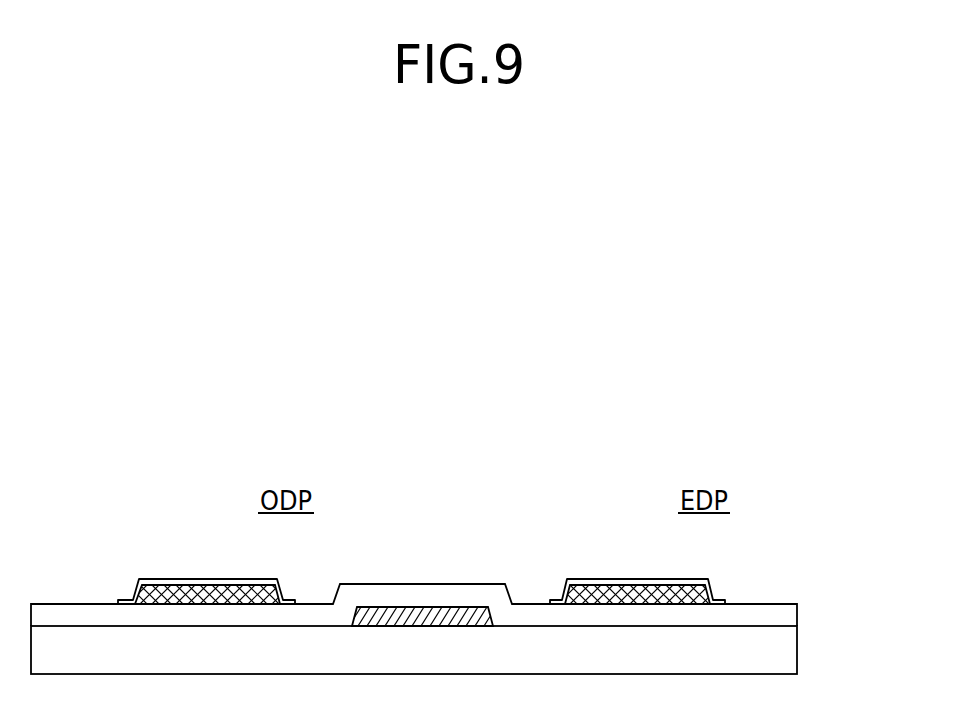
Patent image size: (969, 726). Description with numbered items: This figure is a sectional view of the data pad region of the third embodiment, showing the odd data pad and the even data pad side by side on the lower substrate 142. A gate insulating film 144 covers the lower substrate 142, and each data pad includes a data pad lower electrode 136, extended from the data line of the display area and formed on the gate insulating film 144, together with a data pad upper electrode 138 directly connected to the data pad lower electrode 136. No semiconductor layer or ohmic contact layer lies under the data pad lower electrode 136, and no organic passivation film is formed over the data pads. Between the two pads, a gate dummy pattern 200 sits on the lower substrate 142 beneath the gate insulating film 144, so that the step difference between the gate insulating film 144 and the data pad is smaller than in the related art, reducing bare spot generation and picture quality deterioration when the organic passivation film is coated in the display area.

The data pad lower electrode 136 is at (243, 586).
The data pad upper electrode 138 is at (134, 591).
The lower substrate 142 is at (797, 654).
The gate insulating film 144 is at (797, 622).
The gate dummy pattern 200 is at (417, 607).